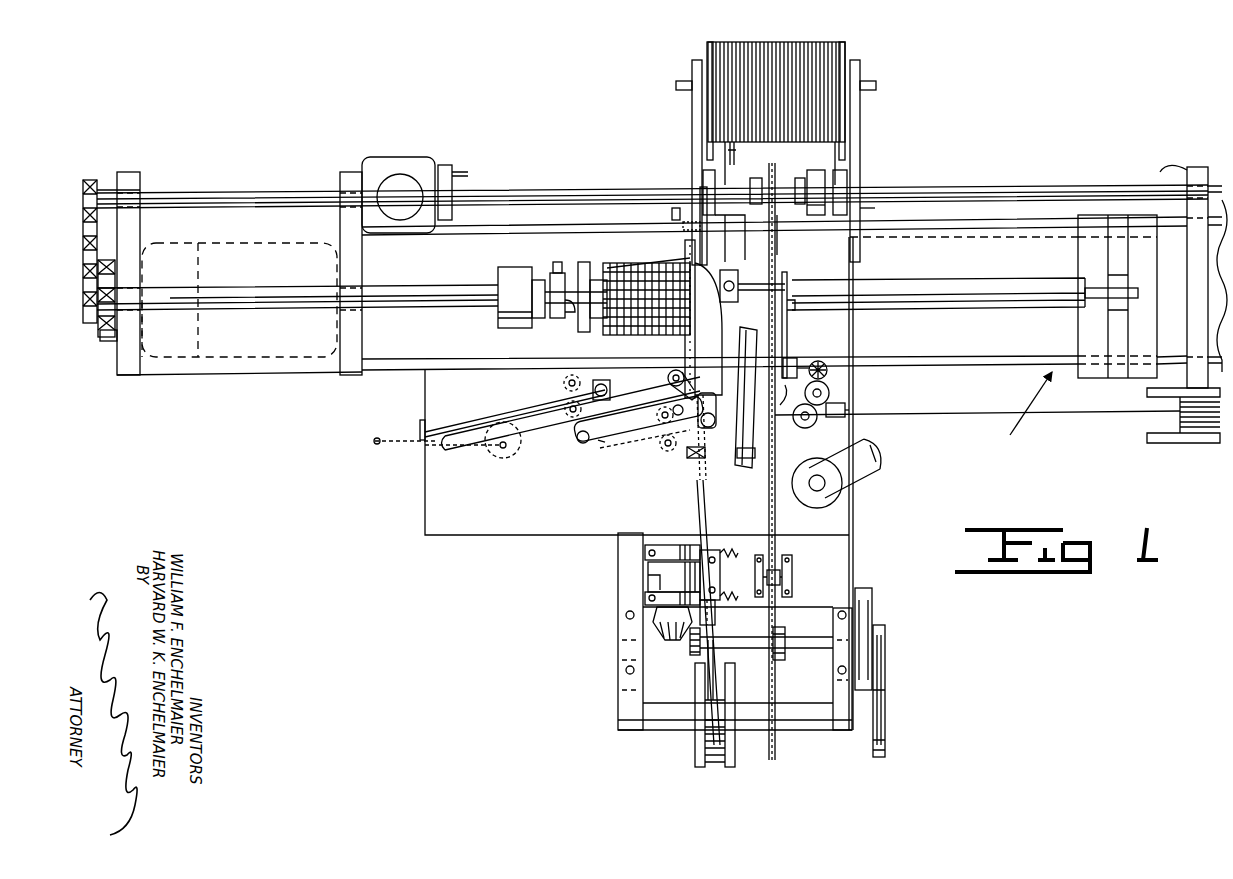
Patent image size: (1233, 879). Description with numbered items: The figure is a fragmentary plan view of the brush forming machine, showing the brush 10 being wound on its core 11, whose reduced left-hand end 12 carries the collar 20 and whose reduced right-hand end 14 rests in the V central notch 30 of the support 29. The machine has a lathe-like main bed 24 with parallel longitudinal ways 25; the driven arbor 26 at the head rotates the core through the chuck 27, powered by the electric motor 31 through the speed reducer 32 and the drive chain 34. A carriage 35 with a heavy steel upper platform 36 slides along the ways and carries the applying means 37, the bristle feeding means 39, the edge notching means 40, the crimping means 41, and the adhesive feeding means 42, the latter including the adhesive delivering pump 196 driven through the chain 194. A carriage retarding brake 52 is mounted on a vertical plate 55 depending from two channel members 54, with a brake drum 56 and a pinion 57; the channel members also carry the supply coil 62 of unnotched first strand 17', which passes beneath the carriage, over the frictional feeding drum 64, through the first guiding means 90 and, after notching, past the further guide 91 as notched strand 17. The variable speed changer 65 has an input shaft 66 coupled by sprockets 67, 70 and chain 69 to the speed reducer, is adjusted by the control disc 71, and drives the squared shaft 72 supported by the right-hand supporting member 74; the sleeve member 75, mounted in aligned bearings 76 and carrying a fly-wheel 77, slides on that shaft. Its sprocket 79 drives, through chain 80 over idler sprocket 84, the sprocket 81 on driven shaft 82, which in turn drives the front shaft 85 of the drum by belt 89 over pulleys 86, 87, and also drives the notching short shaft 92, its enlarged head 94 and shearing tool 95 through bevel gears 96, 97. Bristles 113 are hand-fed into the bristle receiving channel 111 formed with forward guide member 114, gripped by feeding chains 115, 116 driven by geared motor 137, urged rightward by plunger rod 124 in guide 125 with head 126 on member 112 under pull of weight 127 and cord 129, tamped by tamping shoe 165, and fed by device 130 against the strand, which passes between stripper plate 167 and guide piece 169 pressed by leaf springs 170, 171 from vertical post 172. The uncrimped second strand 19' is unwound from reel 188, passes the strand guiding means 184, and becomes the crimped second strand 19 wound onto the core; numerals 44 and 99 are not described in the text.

The brush 10 is at (640, 266).
The core 11 is at (936, 290).
The reduced diameter left-hand end 12 is at (560, 275).
The reduced diameter right-hand end 14 is at (1110, 280).
The first flat strand 17 is at (716, 612).
The unnotched first strand 17' is at (734, 670).
The second strand 19 is at (802, 400).
The uncrimped second strand 19' is at (977, 399).
The collar 20 is at (584, 333).
The main bed 24 is at (1031, 414).
The longitudinal ways 25 is at (452, 358).
The driven arbor 26 is at (427, 286).
The chuck 27 is at (505, 328).
The support 29 is at (1078, 262).
The V central notch 30 is at (1132, 288).
The electric motor 31 is at (282, 358).
The speed reducer 32 is at (175, 358).
The drive chain 34 is at (102, 342).
The carriage 35 is at (862, 272).
The upper platform 36 is at (856, 336).
The means for applying bristles, strands, and adhesive 37 is at (716, 265).
The bristle feeding means 39 is at (603, 445).
The edge notching means 40 is at (680, 545).
The crimping means 41 is at (847, 408).
The adhesive feeding means 42 is at (780, 280).
The bolt 44 is at (668, 232).
The carriage retarding brake 52 is at (642, 242).
The channel members 54 is at (692, 160).
The vertical plate 55 is at (779, 235).
The brake drum 56 is at (862, 212).
The pinion 57 is at (758, 222).
The supply coil 62 is at (806, 140).
The frictional feeding drum 64 is at (738, 745).
The variable speed changer 65 is at (410, 157).
The input shaft 66 is at (222, 192).
The sprocket 67 is at (105, 192).
The chain 69 is at (82, 240).
The sprocket 70 is at (84, 316).
The control disc 71 is at (455, 167).
The squared shaft 72 is at (585, 192).
The right-hand supporting member 74 is at (1180, 168).
The sleeve member 75 is at (807, 186).
The aligned bearings 76 is at (703, 181).
The fly-wheel 77 is at (800, 222).
The sprocket 79 is at (769, 182).
The chain 80 is at (792, 475).
The sprocket 81 is at (770, 660).
The driven shaft 82 is at (818, 650).
The idler sprocket 84 is at (792, 568).
The front shaft 85 is at (805, 722).
The pulley 86 is at (875, 640).
The pulley 87 is at (885, 718).
The belt 89 is at (885, 665).
The first guiding means 90 is at (716, 620).
The further guide 91 is at (695, 460).
The short shaft 92 is at (648, 570).
The enlarged head 94 is at (640, 585).
The shearing tool 95 is at (720, 572).
The bevel gear 96 is at (693, 656).
The bevel gear 97 is at (672, 640).
The spring 99 is at (738, 548).
The bristle receiving channel 111 is at (568, 428).
The member 112 is at (518, 432).
The bristles 113 is at (655, 338).
The forward guide member 114 is at (620, 450).
The bristle feeding chain 115 is at (640, 378).
The bristle feeding chain 116 is at (630, 440).
The plunger rod 124 is at (500, 410).
The guide 125 is at (428, 420).
The head 126 is at (622, 336).
The weight 127 is at (495, 460).
The cord 129 is at (412, 448).
The bristle feeding device 130 is at (676, 450).
The geared motor 137 is at (850, 505).
The tamping shoe 165 is at (618, 430).
The stripper plate 167 is at (696, 340).
The guide piece 169 is at (718, 322).
The leaf spring 170 is at (738, 392).
The leaf spring 171 is at (736, 170).
The vertical post 172 is at (706, 470).
The strand guiding means 184 is at (852, 418).
The reel 188 is at (1162, 428).
The chain 194 is at (790, 338).
The adhesive delivering pump 196 is at (740, 275).